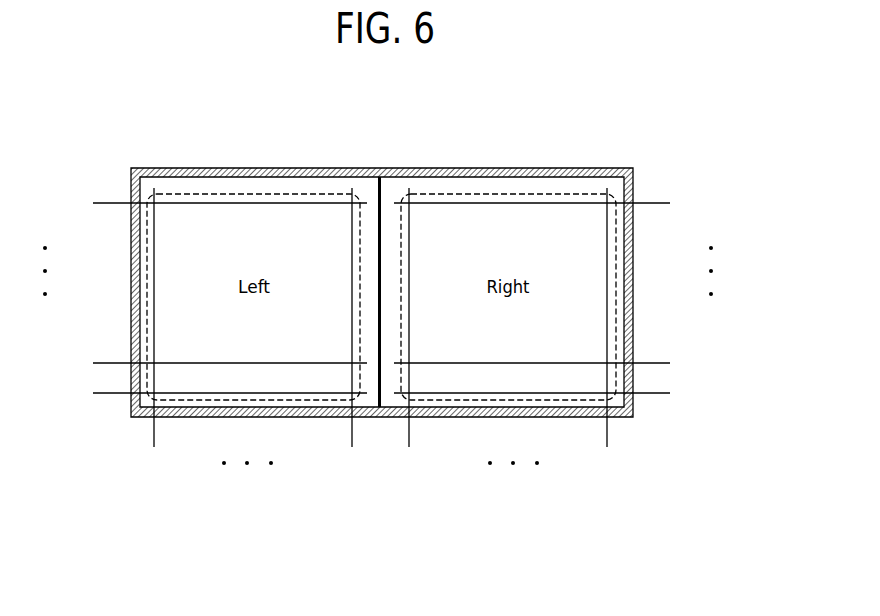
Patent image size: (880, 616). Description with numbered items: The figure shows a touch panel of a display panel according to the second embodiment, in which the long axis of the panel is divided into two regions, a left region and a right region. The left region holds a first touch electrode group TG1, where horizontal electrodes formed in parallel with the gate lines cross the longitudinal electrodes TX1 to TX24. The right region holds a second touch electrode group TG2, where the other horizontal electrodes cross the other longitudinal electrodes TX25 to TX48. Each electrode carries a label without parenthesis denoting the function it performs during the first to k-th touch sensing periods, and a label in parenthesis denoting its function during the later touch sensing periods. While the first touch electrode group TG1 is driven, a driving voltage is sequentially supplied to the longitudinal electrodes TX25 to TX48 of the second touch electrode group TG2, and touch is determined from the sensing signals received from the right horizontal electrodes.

The first touch electrode group TG1 is at (288, 193).
The second touch electrode group TG2 is at (542, 193).
The first longitudinal electrode TX1 is at (157, 344).
The 24th longitudinal electrode TX24 is at (345, 344).
The 25th longitudinal electrode TX25 is at (417, 344).
The 48th longitudinal electrode TX48 is at (606, 344).